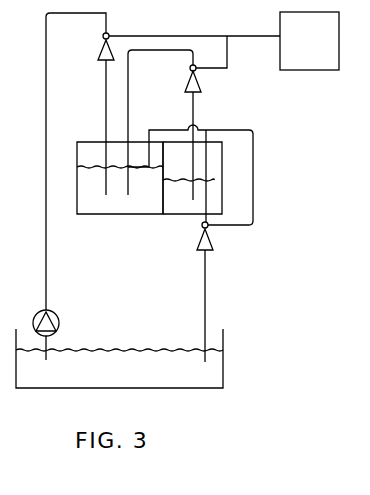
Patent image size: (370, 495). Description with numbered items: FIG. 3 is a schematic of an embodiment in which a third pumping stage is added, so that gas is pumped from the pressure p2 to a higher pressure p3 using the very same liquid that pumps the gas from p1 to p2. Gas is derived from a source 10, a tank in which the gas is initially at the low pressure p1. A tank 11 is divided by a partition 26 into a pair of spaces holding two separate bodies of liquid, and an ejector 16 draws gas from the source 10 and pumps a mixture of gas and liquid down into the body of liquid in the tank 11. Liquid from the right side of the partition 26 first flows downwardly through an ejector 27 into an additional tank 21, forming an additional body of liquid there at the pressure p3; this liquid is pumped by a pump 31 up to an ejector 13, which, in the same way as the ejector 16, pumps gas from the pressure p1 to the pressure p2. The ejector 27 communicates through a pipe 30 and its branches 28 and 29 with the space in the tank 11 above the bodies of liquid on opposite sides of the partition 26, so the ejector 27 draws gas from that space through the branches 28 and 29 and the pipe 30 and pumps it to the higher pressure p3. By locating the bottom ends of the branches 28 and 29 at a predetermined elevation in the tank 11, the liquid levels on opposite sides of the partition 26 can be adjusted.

The source 10 is at (339, 26).
The tank 11 is at (91, 214).
The ejector 13 is at (189, 102).
The ejector means 16 is at (200, 84).
The additional tank 21 is at (223, 372).
The partition 26 is at (163, 202).
The ejector 27 is at (214, 243).
The branch 28 is at (149, 130).
The branch 29 is at (209, 138).
The pipe 30 is at (253, 177).
The pump 31 is at (59, 321).